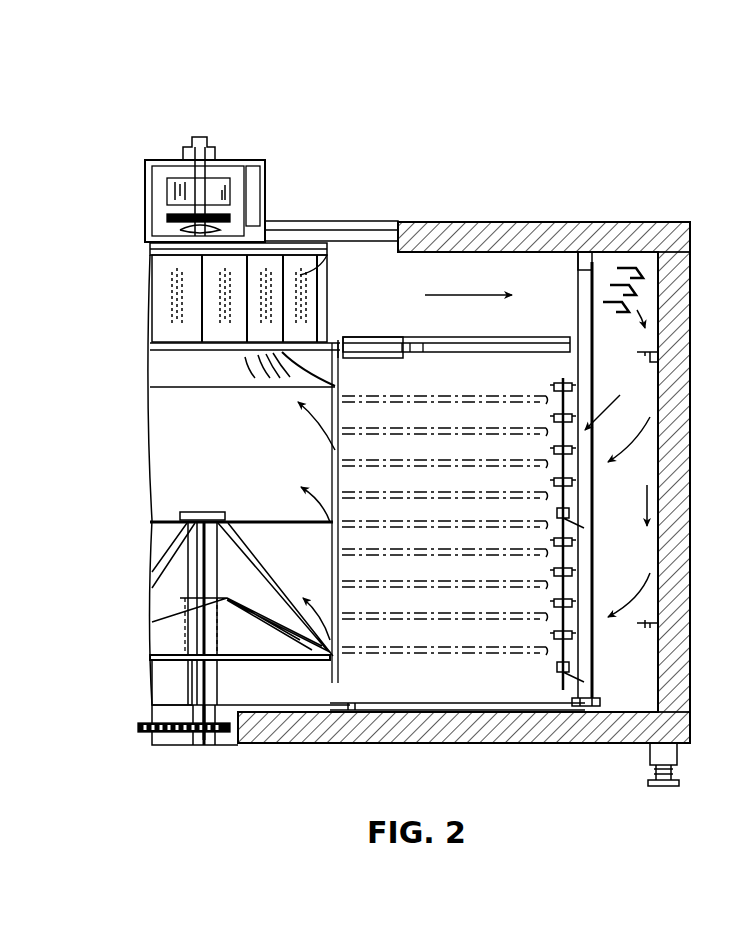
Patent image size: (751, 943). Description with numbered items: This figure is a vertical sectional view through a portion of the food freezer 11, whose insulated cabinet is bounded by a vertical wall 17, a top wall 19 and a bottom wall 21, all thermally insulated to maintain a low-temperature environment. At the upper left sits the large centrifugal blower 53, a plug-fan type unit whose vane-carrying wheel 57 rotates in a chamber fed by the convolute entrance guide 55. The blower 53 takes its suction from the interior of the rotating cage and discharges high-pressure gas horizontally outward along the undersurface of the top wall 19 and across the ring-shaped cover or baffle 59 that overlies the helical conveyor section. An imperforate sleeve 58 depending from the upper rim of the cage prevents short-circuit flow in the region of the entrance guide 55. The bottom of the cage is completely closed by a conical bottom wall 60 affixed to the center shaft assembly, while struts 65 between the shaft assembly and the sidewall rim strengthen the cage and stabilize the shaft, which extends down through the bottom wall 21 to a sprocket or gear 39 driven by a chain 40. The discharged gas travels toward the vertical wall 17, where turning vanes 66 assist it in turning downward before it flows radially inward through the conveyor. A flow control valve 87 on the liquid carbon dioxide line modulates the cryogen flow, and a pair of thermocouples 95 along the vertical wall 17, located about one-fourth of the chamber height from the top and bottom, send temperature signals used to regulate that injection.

The food freezer 11 is at (668, 200).
The vertical wall 17 is at (692, 462).
The top wall 19 is at (518, 222).
The bottom wall 21 is at (455, 745).
The sprocket or gear 39 is at (207, 736).
The chain 40 is at (147, 733).
The centrifugal blower 53 is at (150, 268).
The convolute entrance guide 55 is at (212, 382).
The vane-carrying wheel 57 is at (330, 280).
The imperforate sleeve 58 is at (343, 358).
The ring-shaped cover or baffle 59 is at (458, 340).
The conical bottom wall 60 is at (165, 606).
The struts 65 is at (253, 572).
The turning vanes 66 is at (620, 305).
The flow control valve 87 is at (598, 573).
The thermocouples 95 is at (647, 362).